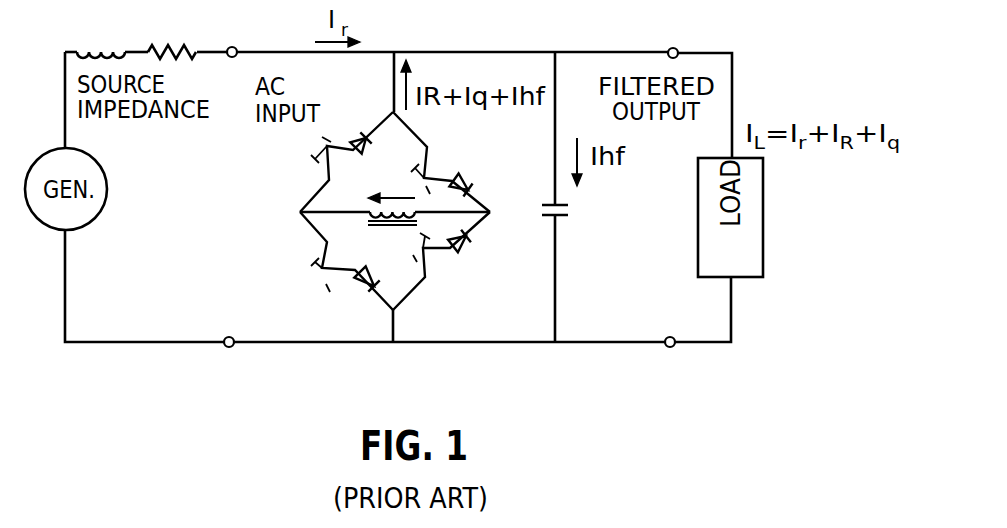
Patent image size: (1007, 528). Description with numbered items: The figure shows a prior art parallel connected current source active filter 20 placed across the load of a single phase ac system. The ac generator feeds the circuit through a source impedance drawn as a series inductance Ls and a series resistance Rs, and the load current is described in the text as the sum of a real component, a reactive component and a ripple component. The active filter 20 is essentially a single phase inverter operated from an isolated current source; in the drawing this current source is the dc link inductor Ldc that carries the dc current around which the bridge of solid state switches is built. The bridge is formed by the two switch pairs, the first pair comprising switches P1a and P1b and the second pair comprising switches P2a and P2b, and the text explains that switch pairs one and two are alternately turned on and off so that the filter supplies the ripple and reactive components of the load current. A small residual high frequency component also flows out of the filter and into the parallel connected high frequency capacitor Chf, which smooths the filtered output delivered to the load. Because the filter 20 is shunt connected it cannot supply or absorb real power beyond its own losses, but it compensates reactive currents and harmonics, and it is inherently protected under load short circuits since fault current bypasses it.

The parallel connected current source active filter 20 is at (336, 211).
The source inductance Ls is at (101, 37).
The source resistance Rs is at (172, 37).
The high frequency capacitor Chf is at (577, 220).
The dc inductor Ldc is at (388, 234).
The thyristor P1a is at (330, 162).
The thyristor P2a is at (441, 162).
The thyristor P2b is at (334, 261).
The thyristor P1b is at (441, 261).